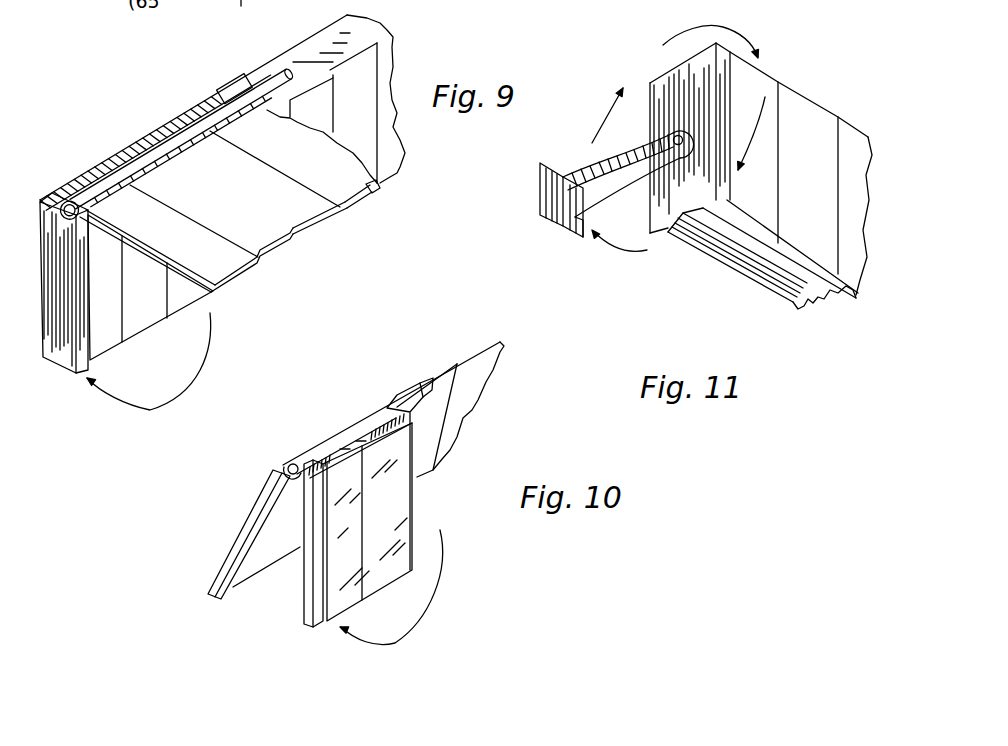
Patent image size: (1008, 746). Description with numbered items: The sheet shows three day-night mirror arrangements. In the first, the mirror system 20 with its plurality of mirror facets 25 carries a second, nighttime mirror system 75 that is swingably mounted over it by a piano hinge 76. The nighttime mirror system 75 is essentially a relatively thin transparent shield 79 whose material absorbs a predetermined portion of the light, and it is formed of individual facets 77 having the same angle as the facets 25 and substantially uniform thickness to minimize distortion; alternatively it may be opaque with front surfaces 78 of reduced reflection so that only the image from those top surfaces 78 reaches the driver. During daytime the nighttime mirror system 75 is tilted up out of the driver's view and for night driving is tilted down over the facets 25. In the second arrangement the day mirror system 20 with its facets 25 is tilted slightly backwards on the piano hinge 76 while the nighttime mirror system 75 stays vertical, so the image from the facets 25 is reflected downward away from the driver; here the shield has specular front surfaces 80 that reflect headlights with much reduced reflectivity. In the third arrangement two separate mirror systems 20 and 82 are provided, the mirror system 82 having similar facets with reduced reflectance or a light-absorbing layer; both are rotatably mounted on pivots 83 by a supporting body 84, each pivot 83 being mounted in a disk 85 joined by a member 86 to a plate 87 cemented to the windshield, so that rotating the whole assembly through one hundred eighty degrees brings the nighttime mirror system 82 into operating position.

In FIG. 9, the mirror system 20 is at (188, 311).
In FIG. 11, the mirror system 20 is at (777, 313).
In FIG. 10, the mirror system 20 is at (248, 509).
In FIG. 9, the mirror facets 25 is at (133, 317).
In FIG. 11, the mirror facets 25 is at (770, 130).
In FIG. 10, the mirror facets 25 is at (290, 553).
In FIG. 9, the nighttime mirror system 75 is at (338, 220).
In FIG. 10, the nighttime mirror system 75 is at (418, 556).
In FIG. 9, the piano hinge 76 is at (93, 200).
In FIG. 10, the piano hinge 76 is at (295, 462).
In FIG. 9, the facets 77 is at (270, 254).
In FIG. 9, the front surfaces 78 is at (183, 150).
In FIG. 9, the transparent shield 79 is at (372, 193).
In FIG. 10, the specular front surfaces 80 is at (343, 544).
In FIG. 11, the mirror system 82 is at (718, 278).
In FIG. 11, the pivots 83 is at (673, 139).
In FIG. 11, the supporting body 84 is at (680, 207).
In FIG. 11, the disk 85 is at (673, 87).
In FIG. 11, the member 86 is at (592, 183).
In FIG. 11, the plate 87 is at (563, 163).